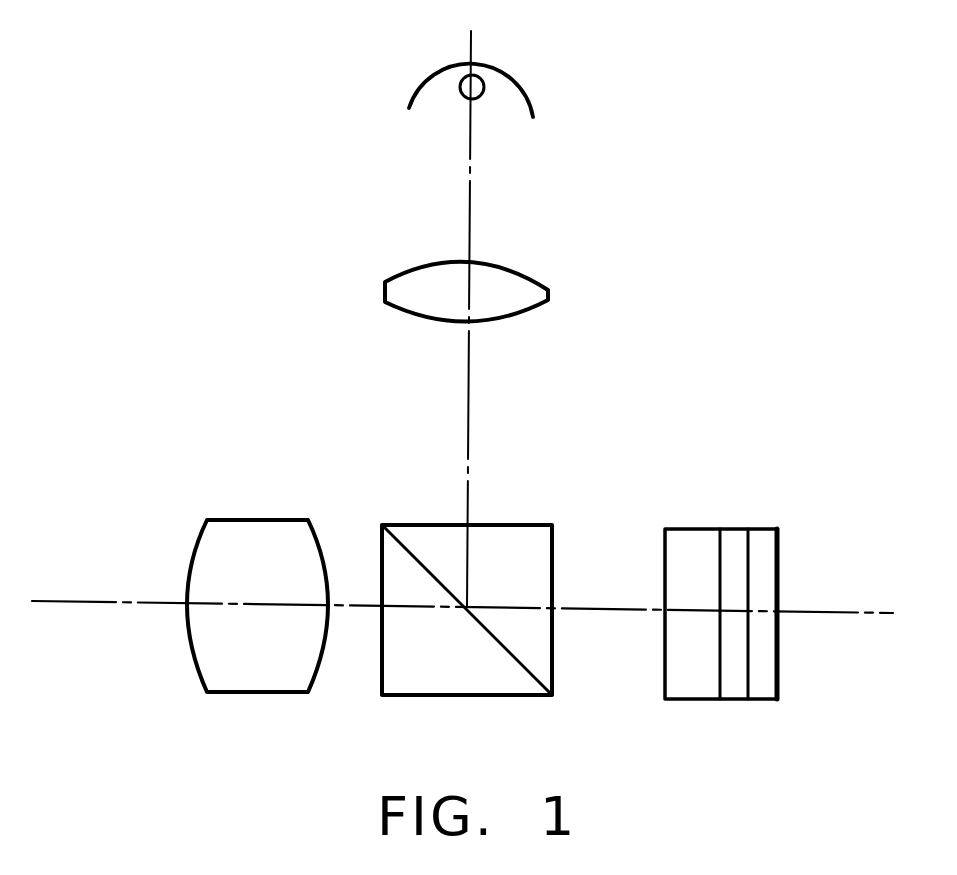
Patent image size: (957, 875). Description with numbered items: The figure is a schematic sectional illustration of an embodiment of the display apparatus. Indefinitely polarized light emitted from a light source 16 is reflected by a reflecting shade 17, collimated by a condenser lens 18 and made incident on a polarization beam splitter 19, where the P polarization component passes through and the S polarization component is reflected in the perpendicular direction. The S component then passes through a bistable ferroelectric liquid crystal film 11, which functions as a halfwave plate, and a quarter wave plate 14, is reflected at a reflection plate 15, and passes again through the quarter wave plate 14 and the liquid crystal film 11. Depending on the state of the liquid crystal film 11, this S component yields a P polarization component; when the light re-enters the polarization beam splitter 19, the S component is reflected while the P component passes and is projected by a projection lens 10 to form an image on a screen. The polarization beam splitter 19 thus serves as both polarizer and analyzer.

The projection lens 10 is at (283, 520).
The bistable ferroelectric liquid crystal film 11 is at (687, 529).
The quarter wave plate 14 is at (732, 529).
The reflection plate 15 is at (765, 529).
The light source 16 is at (483, 95).
The reflecting shade 17 is at (532, 84).
The condenser lens 18 is at (548, 295).
The polarization beam splitter 19 is at (505, 525).